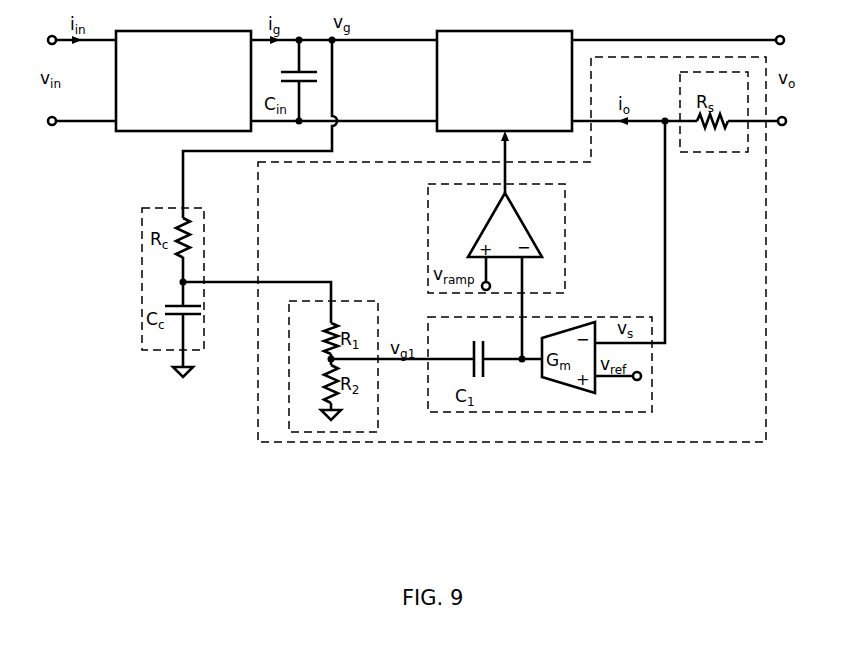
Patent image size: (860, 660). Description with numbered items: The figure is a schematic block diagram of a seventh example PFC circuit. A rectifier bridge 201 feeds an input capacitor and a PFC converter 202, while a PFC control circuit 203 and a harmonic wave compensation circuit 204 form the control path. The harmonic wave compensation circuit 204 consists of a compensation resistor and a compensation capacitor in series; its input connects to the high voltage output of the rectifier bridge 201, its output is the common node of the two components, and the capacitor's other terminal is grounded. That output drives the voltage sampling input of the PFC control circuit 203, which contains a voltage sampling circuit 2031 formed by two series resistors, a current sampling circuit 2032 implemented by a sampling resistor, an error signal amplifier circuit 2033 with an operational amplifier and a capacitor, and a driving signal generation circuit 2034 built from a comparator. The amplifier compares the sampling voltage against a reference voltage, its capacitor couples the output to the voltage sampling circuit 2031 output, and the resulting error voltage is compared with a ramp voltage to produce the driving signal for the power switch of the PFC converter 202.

The rectifier bridge 201 is at (183, 81).
The PFC converter 202 is at (504, 81).
The PFC control circuit 203 is at (767, 263).
The harmonic wave compensation circuit 204 is at (142, 248).
The voltage sampling circuit 2031 is at (367, 301).
The current sampling circuit 2032 is at (714, 152).
The error signal amplifier circuit 2033 is at (652, 398).
The driving signal generation circuit 2034 is at (566, 229).